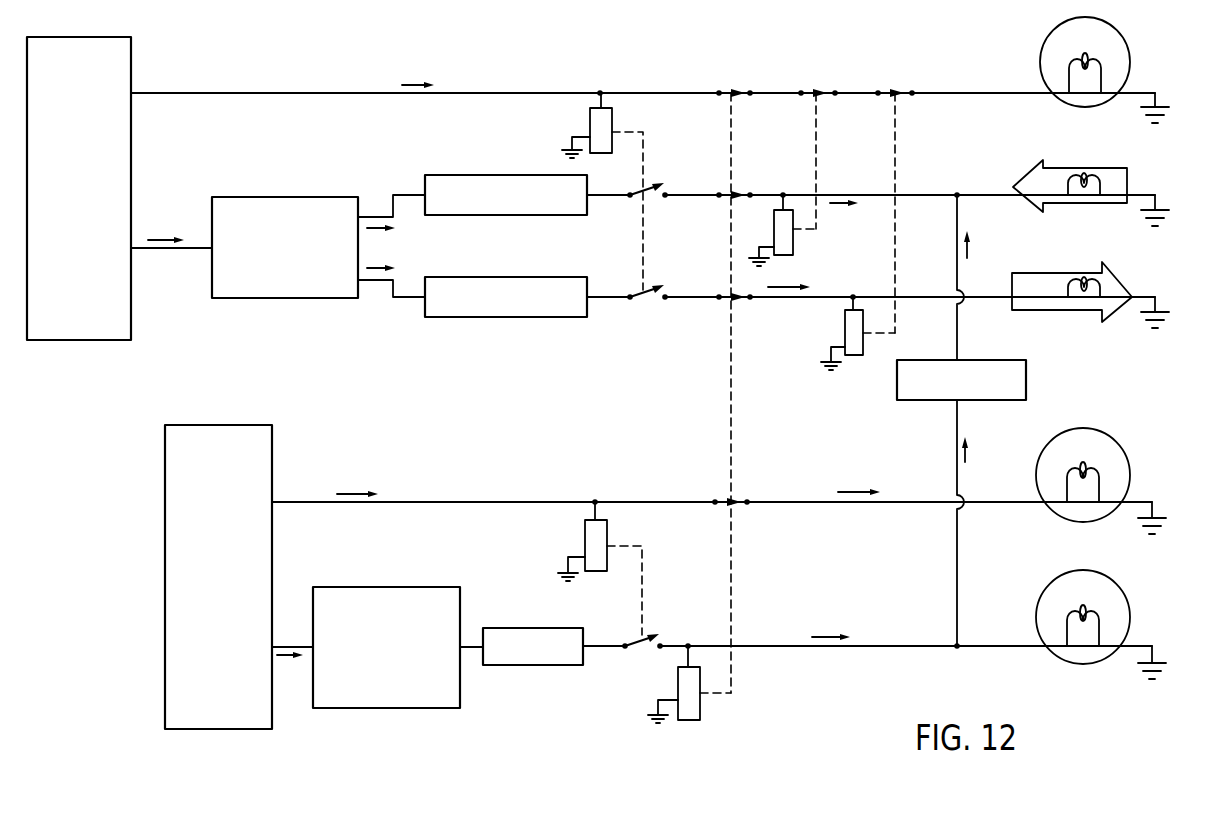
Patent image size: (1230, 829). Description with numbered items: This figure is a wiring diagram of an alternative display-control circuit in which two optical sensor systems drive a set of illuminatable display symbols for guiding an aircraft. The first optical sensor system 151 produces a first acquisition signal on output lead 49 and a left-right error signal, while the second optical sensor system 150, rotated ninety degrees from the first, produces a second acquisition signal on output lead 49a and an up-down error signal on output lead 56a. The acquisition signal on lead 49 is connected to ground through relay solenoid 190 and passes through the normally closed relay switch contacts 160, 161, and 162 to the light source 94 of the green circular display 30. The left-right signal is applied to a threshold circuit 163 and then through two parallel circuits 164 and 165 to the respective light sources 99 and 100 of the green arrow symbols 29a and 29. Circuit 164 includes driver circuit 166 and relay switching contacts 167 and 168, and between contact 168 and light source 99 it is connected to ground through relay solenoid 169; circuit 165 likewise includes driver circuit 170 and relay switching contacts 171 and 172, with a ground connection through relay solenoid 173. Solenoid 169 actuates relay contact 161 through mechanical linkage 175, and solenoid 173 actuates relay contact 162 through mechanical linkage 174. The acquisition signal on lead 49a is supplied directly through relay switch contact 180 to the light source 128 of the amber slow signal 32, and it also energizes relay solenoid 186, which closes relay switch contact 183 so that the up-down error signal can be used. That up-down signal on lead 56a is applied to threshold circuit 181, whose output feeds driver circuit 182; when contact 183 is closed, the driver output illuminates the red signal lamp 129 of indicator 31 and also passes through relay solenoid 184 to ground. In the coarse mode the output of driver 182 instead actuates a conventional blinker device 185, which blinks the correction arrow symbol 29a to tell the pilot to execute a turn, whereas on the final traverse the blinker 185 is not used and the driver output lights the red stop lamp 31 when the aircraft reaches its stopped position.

The optical sensor system 151 is at (131, 62).
The output lead 49 is at (262, 93).
The relay switch contact 160 is at (733, 93).
The relay switch contact 161 is at (808, 93).
The relay switch contact 162 is at (885, 93).
The mechanical linkage 175 is at (816, 152).
The mechanical linkage 174 is at (895, 152).
The green circular display 30 is at (1113, 28).
The light source 94 is at (1103, 58).
The relay solenoid 190 is at (590, 117).
The threshold circuit 163 is at (255, 197).
The parallel circuit 164 is at (393, 192).
The parallel circuit 165 is at (397, 300).
The driver circuit 166 is at (490, 176).
The driver circuit 170 is at (470, 317).
The relay switching contact 167 is at (650, 183).
The relay switching contact 171 is at (637, 300).
The relay switching contact 168 is at (733, 193).
The relay switching contact 172 is at (712, 298).
The relay solenoid 169 is at (793, 248).
The relay solenoid 173 is at (845, 332).
The green arrow symbol 29a is at (1060, 168).
The light source 99 is at (1103, 178).
The green arrow symbol 29 is at (1058, 272).
The light source 100 is at (1078, 277).
The blinker device 185 is at (1026, 372).
The optical sensor system 150 is at (272, 450).
The output lead 49a is at (428, 503).
The relay switch contact 180 is at (738, 502).
The relay solenoid 186 is at (607, 530).
The output lead 56a is at (291, 645).
The threshold circuit 181 is at (390, 708).
The driver circuit 182 is at (505, 665).
The relay switch contact 183 is at (637, 648).
The relay solenoid 184 is at (700, 712).
The amber slow signal 32 is at (1040, 458).
The light source 128 is at (1093, 465).
The red stop lamp 31 is at (1055, 583).
The light source 129 is at (1097, 613).